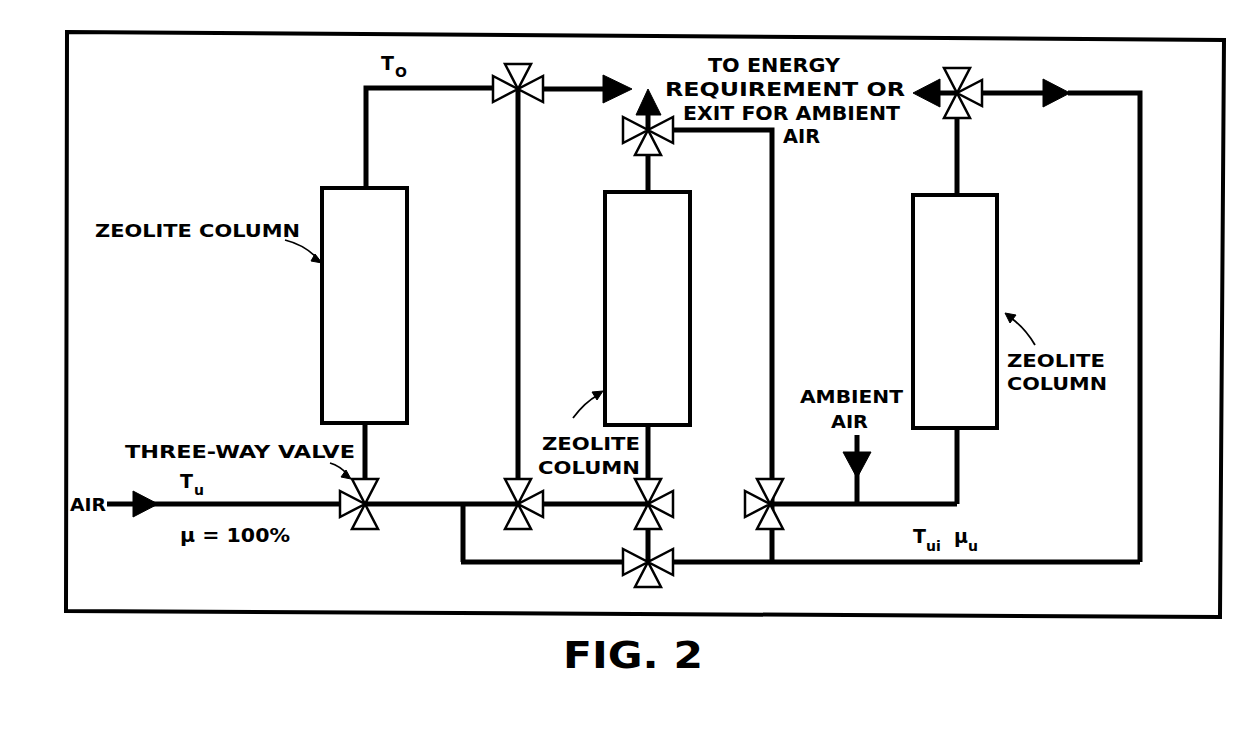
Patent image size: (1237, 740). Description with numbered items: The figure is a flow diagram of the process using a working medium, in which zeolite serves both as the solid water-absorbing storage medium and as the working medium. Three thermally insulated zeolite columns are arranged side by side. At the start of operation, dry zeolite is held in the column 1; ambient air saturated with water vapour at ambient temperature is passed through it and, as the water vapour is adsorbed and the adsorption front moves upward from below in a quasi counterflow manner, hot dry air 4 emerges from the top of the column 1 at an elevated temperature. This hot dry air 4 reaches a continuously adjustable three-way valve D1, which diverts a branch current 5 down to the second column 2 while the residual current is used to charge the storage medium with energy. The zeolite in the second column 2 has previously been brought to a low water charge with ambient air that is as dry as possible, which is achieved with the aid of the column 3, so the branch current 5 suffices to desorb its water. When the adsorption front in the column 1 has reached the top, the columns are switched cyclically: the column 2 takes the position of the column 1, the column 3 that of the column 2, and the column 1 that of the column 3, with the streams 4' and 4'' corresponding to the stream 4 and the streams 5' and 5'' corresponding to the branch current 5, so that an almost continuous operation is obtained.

The column 1 is at (364, 305).
The second column 2 is at (647, 308).
The column 3 is at (955, 311).
The air 4 is at (402, 138).
The stream 4' is at (620, 173).
The stream 4'' is at (938, 156).
The branch current 5 is at (497, 296).
The stream 5' is at (738, 346).
The stream 5'' is at (1080, 320).
The three-way valve D1 is at (532, 76).